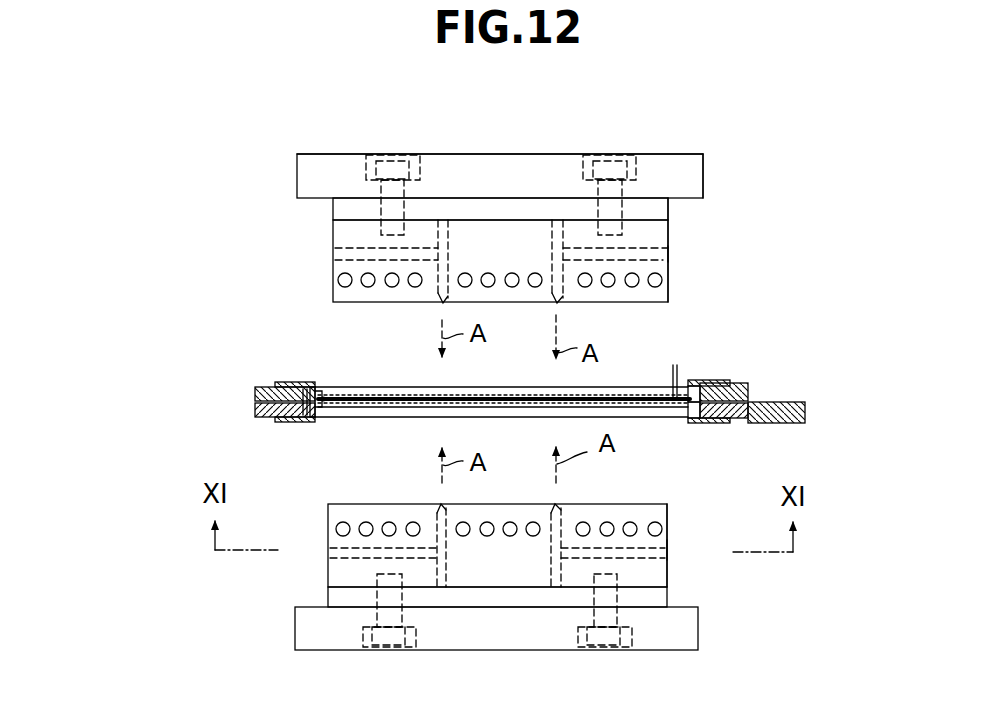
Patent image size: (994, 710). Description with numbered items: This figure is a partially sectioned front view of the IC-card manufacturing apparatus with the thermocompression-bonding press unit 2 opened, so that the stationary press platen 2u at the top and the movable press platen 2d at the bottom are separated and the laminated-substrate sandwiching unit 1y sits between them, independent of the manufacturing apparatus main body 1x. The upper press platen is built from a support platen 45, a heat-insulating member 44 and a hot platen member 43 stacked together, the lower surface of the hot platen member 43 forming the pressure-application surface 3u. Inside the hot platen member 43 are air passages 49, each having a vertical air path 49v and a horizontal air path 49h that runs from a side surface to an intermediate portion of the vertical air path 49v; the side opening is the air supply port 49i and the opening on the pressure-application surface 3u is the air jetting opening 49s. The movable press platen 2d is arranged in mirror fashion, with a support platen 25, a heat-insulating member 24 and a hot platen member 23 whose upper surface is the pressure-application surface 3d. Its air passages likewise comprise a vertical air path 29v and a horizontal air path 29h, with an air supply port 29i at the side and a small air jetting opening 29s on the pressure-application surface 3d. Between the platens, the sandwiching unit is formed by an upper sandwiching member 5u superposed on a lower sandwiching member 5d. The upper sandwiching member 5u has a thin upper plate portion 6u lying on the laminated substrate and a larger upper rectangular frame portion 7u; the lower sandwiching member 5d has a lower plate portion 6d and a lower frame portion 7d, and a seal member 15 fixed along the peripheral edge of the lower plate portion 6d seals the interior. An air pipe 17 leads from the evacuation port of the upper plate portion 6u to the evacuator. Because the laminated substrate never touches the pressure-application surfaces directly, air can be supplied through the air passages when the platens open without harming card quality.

The thermocompression-bonding press unit 2 is at (293, 138).
The manufacturing apparatus main body 1x is at (735, 126).
The laminated-substrate sandwiching unit 1y is at (750, 316).
The stationary press platen 2u is at (705, 221).
The movable press platen 2d is at (702, 576).
The support platen 45 is at (297, 178).
The heat-insulating member 44 is at (333, 213).
The hot platen member 43 is at (333, 235).
The air passages 49 is at (333, 255).
The horizontal air path 49h is at (345, 248).
The vertical air path 49v is at (556, 237).
The air supply port 49i is at (668, 253).
The air jetting opening 49s is at (446, 300).
The pressure-application surface 3u is at (340, 302).
The pressure-application surface 3d is at (340, 502).
The seal member 15 is at (325, 395).
The upper rectangular frame portion 7u is at (255, 392).
The lower frame portion 7d is at (255, 409).
The air pipe 17 is at (680, 372).
The upper plate portion 6u is at (655, 397).
The lower plate portion 6d is at (668, 410).
The upper sandwiching member 5u is at (754, 361).
The lower sandwiching member 5d is at (717, 436).
The hot platen member 23 is at (328, 570).
The heat-insulating member 24 is at (328, 597).
The support platen 25 is at (295, 630).
The horizontal air path 29h is at (358, 558).
The vertical air path 29v is at (447, 565).
The air supply port 29i is at (667, 548).
The air jetting opening 29s is at (440, 500).